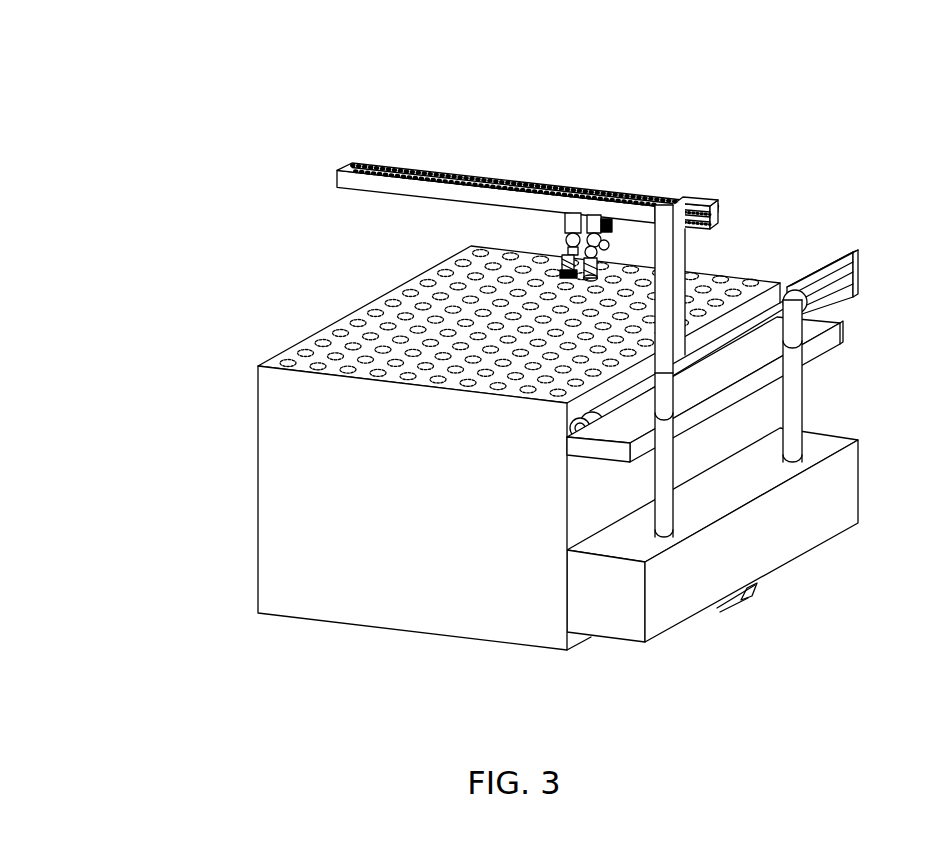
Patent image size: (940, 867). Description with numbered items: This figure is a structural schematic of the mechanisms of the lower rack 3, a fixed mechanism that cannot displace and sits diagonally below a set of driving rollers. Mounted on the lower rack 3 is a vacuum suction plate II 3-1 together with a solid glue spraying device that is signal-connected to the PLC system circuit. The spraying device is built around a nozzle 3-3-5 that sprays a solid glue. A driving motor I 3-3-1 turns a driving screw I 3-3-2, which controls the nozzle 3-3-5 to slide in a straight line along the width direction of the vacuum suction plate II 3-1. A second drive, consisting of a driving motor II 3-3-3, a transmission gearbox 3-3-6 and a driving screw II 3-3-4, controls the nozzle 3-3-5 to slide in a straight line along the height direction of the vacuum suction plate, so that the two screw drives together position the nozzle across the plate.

The lower rack 3 is at (482, 527).
The vacuum suction plate II 3-1 is at (418, 345).
The driving motor I 3-3-1 is at (700, 204).
The driving screw I 3-3-2 is at (571, 216).
The driving motor II 3-3-3 is at (750, 594).
The driving screw II 3-3-4 is at (667, 500).
The nozzle 3-3-5 is at (607, 222).
The transmission gearbox 3-3-6 is at (775, 523).